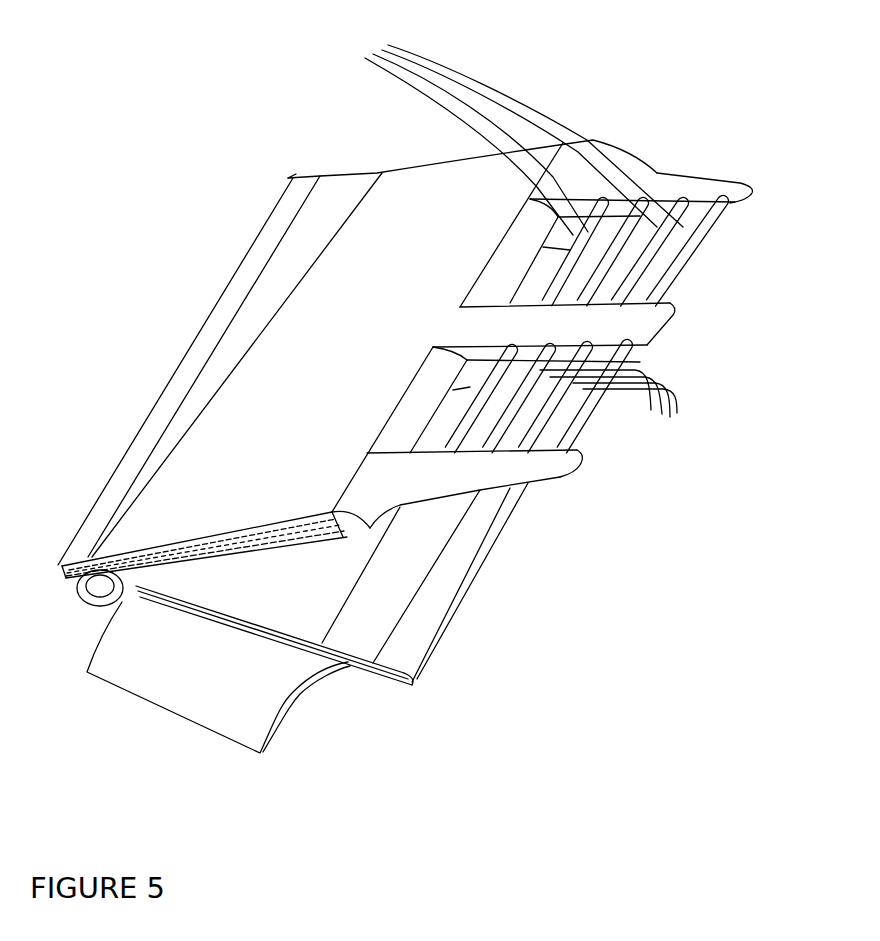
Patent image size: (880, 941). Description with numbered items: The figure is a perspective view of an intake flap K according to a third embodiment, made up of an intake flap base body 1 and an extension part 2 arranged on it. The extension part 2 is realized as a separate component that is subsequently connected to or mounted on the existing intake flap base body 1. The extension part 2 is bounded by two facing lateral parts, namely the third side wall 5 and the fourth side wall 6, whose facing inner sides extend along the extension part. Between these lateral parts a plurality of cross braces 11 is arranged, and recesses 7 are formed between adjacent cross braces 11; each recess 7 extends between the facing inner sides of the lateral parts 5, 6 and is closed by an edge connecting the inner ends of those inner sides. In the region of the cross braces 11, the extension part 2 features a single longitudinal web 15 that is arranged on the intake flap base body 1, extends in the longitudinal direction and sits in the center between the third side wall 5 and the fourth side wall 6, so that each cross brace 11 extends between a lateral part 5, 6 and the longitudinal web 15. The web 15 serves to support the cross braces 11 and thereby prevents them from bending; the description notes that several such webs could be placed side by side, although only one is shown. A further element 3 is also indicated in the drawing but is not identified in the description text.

The connector assembly K is at (176, 94).
The intake flap base body 1 is at (287, 380).
The extension part 2 is at (603, 425).
The upper contact block 3 is at (493, 220).
The third side wall 5 is at (657, 173).
The fourth side wall 6 is at (525, 473).
The recesses 7 is at (516, 129).
The cross braces 11 is at (613, 410).
The longitudinal web 15 is at (650, 320).